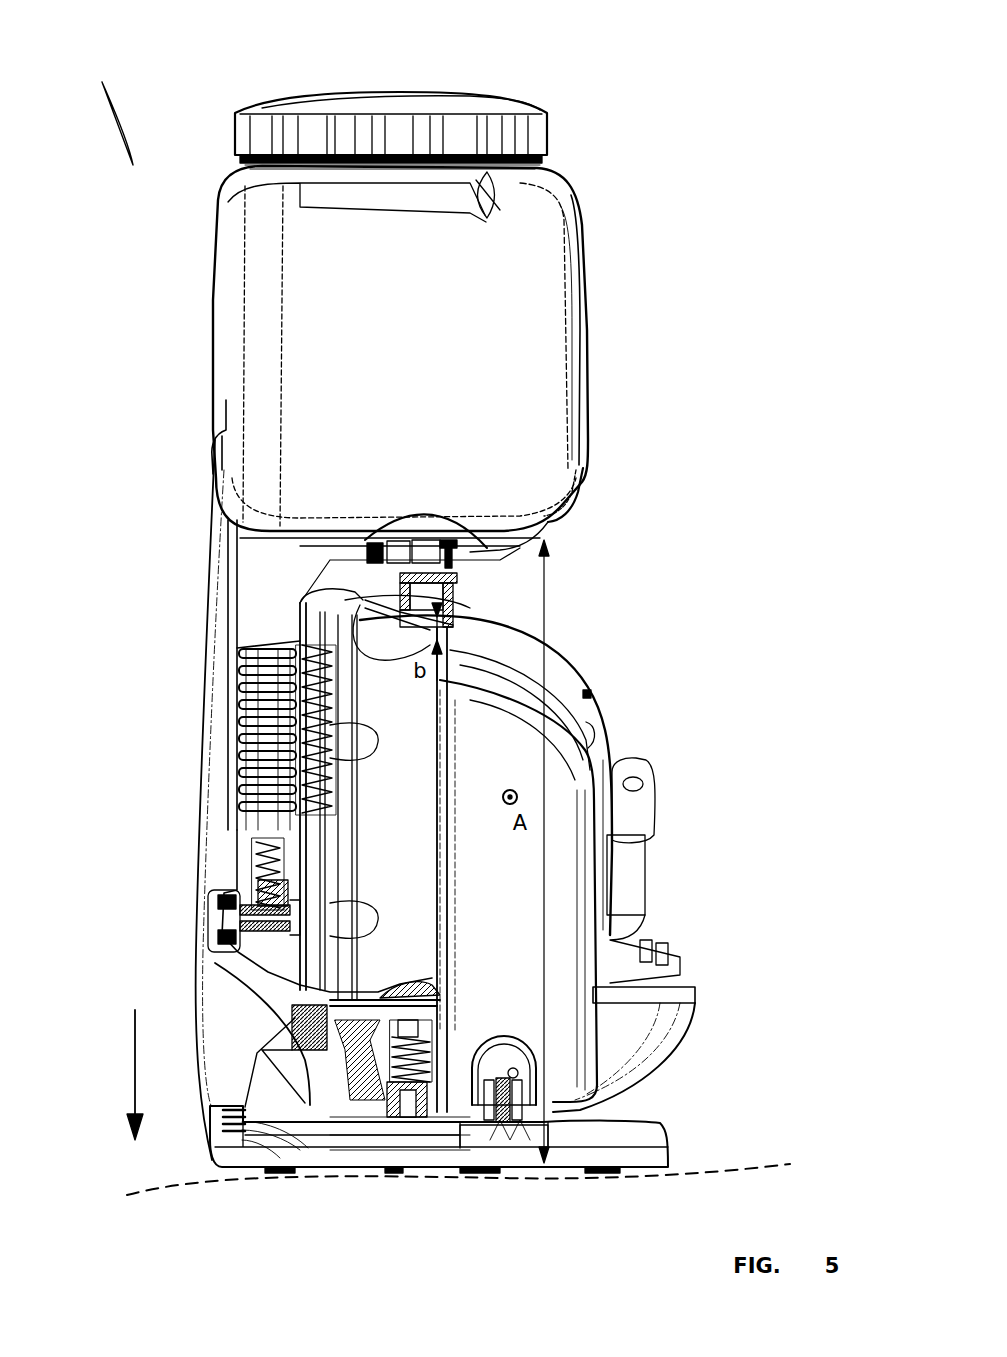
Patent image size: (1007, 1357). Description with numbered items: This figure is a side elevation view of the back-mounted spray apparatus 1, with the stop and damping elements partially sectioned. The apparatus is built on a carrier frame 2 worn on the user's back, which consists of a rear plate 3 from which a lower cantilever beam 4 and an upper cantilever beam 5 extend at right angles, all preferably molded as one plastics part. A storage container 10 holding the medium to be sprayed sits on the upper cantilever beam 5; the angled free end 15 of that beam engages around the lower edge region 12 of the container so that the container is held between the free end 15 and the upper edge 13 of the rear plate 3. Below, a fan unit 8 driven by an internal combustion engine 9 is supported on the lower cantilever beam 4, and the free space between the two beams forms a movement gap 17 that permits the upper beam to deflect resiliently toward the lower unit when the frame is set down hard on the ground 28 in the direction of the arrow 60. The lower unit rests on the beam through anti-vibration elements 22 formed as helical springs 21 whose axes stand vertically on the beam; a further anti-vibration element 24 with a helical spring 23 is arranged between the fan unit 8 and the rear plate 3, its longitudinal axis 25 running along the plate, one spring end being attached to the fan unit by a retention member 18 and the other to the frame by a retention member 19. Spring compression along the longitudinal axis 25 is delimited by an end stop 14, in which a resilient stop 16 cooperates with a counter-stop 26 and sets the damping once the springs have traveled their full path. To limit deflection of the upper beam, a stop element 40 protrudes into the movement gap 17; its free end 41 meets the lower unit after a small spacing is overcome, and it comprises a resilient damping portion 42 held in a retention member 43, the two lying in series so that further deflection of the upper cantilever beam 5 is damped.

The spray apparatus 1 is at (190, 265).
The carrier frame 2 is at (210, 592).
The rear plate 3 is at (211, 718).
The lower cantilever beam 4 is at (668, 1146).
The upper cantilever beam 5 is at (545, 520).
The fan unit 8 is at (398, 683).
The internal combustion engine 9 is at (557, 758).
The storage container 10 is at (403, 341).
The lower edge region 12 is at (545, 497).
The upper edge 13 is at (214, 442).
The end stop 14 is at (490, 1153).
The free end 15 is at (583, 470).
The resilient stop 16 is at (528, 1145).
The movement gap 17 is at (497, 588).
The retention member 18 is at (235, 800).
The retention member 19 is at (222, 914).
The helical spring 21 is at (420, 1142).
The anti-vibration element 22 is at (377, 1086).
The helical spring 23 is at (263, 873).
The anti-vibration element 24 is at (260, 850).
The longitudinal axis 25 is at (325, 835).
The counter-stop 26 is at (500, 1145).
The ground 28 is at (193, 1182).
The stop element 40 is at (419, 565).
The free end 41 is at (397, 602).
The resilient damping portion 42 is at (388, 553).
The retention member 43 is at (456, 578).
The arrow 60 is at (132, 1030).